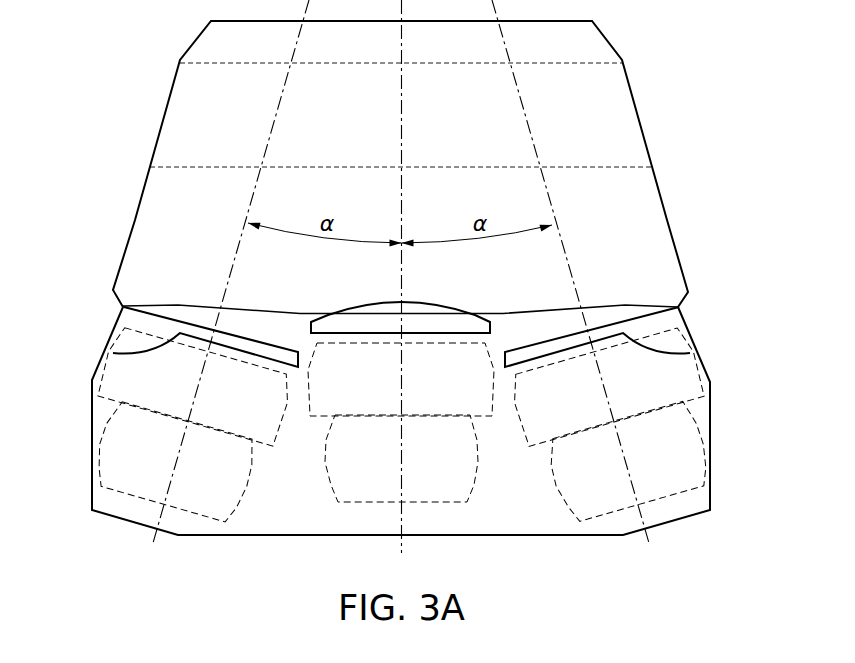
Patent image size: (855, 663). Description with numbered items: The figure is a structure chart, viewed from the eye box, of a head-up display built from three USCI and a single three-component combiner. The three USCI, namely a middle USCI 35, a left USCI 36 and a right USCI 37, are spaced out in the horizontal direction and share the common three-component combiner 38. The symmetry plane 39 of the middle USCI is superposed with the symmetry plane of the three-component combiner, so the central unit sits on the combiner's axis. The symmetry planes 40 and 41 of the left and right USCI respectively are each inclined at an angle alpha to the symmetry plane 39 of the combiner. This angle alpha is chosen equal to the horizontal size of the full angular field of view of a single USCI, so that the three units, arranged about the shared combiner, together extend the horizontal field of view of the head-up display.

The middle USCI 35 is at (370, 303).
The left USCI 36 is at (110, 353).
The right USCI 37 is at (690, 353).
The three-component combiner 38 is at (152, 147).
The symmetry plane of the middle USCI 39 is at (402, 147).
The symmetry plane of the left USCI 40 is at (272, 127).
The symmetry plane of the right USCI 41 is at (537, 150).